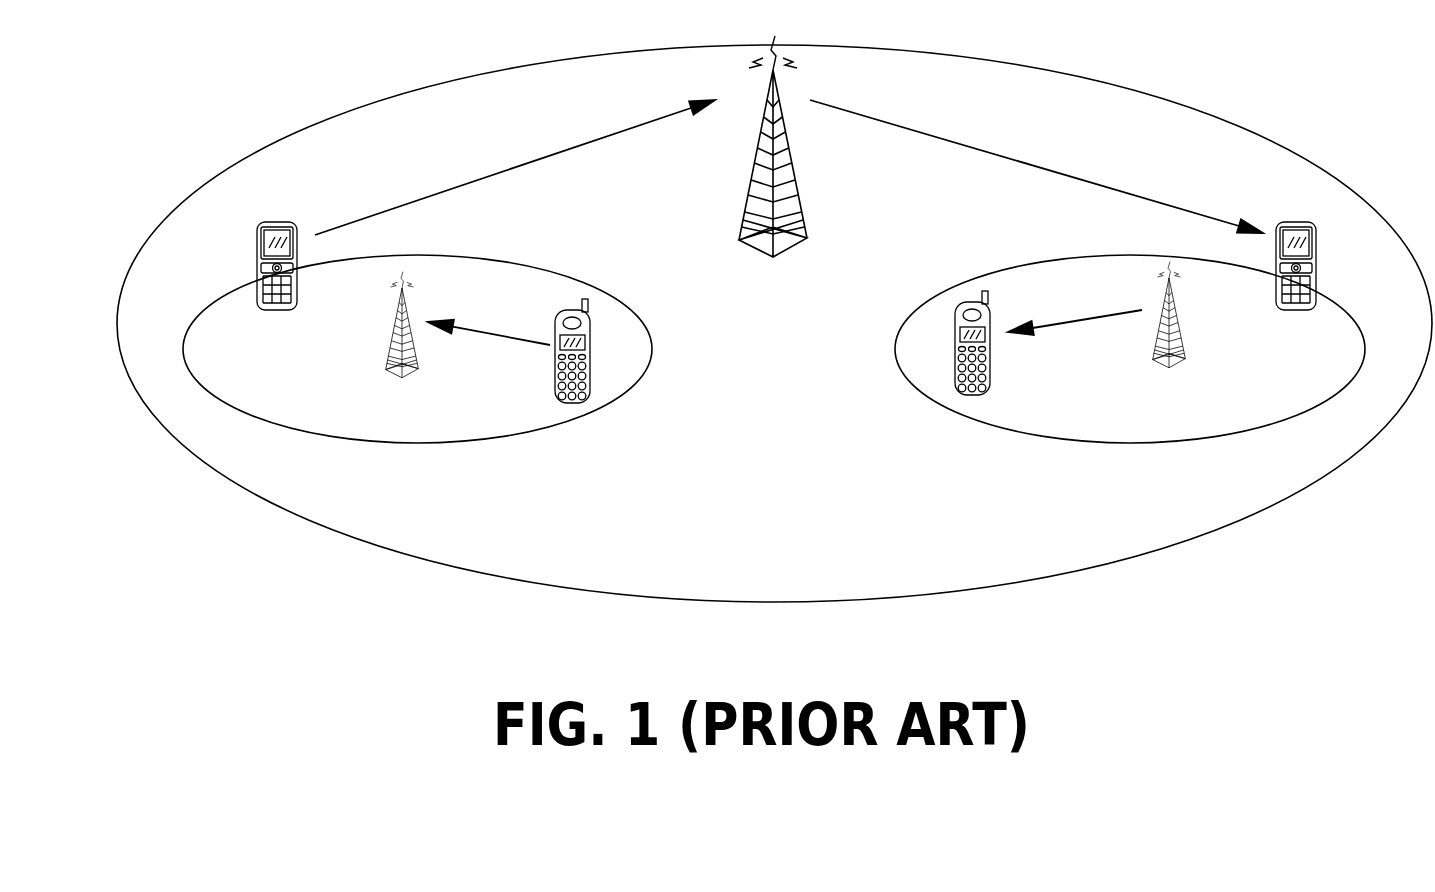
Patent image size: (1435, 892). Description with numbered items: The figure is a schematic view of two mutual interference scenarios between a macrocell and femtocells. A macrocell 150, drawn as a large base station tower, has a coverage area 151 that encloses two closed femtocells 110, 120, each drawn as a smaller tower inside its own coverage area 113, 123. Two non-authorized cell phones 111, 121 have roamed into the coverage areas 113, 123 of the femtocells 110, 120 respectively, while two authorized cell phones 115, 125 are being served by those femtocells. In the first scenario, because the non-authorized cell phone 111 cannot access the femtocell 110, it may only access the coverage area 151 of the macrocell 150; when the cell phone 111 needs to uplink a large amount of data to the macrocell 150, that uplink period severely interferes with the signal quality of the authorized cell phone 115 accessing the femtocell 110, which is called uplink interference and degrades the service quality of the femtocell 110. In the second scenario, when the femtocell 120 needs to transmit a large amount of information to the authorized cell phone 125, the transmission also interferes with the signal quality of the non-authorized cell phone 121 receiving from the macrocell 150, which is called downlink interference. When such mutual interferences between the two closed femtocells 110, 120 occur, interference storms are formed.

The coverage area of macrocell 151 is at (415, 90).
The macrocell 150 is at (805, 212).
The coverage area of femtocell 113 is at (420, 257).
The closed femtocell 110 is at (388, 356).
The non-authorized cell phone 111 is at (257, 263).
The authorized cell phone 115 is at (555, 383).
The coverage area of femtocell 123 is at (1015, 268).
The closed femtocell 120 is at (1185, 344).
The non-authorized cell phone 121 is at (1317, 263).
The authorized cell phone 125 is at (990, 383).